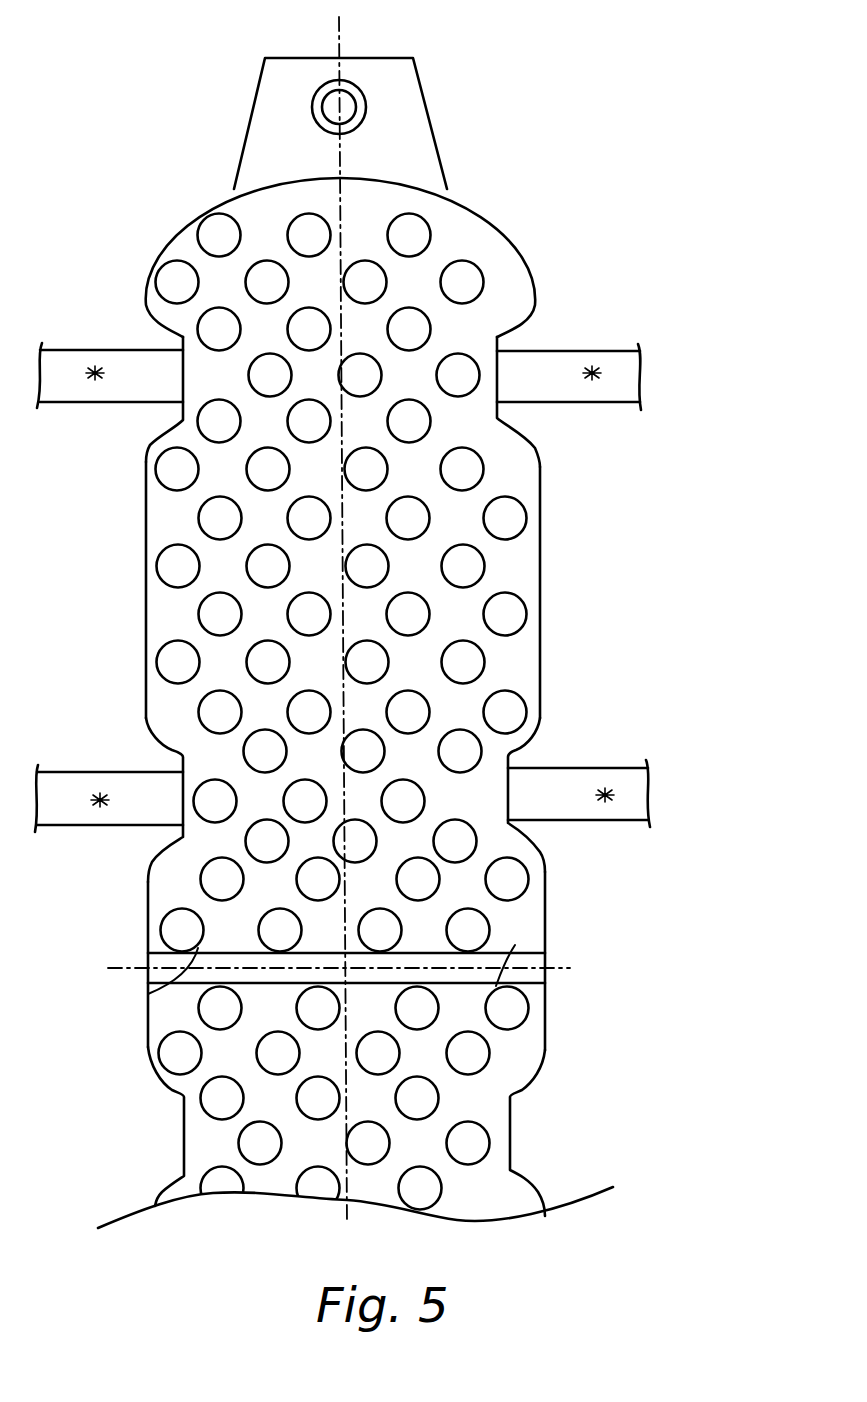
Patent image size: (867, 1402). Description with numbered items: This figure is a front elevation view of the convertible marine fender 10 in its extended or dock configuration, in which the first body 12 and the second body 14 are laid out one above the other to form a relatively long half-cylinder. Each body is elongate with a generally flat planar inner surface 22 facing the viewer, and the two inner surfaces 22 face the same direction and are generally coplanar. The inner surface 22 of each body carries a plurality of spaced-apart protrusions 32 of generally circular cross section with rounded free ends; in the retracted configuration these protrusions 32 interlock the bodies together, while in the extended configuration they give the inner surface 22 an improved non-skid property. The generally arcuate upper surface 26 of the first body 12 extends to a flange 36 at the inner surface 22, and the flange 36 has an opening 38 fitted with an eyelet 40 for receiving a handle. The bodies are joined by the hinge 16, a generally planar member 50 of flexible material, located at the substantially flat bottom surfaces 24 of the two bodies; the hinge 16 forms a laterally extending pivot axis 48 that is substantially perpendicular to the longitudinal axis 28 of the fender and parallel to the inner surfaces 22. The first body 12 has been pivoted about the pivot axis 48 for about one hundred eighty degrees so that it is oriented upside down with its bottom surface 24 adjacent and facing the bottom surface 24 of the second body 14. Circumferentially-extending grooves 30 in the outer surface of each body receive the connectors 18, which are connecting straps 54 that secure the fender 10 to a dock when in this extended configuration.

The convertible marine fender 10 is at (696, 606).
The first body 12 is at (147, 1046).
The second body 14 is at (145, 550).
The hinge 16 is at (556, 958).
The connectors 18 is at (612, 410).
The inner surface 22 is at (541, 646).
The bottom surface 24 is at (148, 994).
The upper surface 26 is at (177, 228).
The longitudinal axis 28 is at (341, 143).
The grooves 30 is at (164, 327).
The protrusions 32 is at (526, 528).
The flange 36 is at (248, 110).
The opening 38 is at (362, 114).
The eyelet 40 is at (366, 98).
The pivot axis 48 is at (558, 968).
The planar member 50 is at (148, 959).
The connecting straps 54 is at (562, 403).